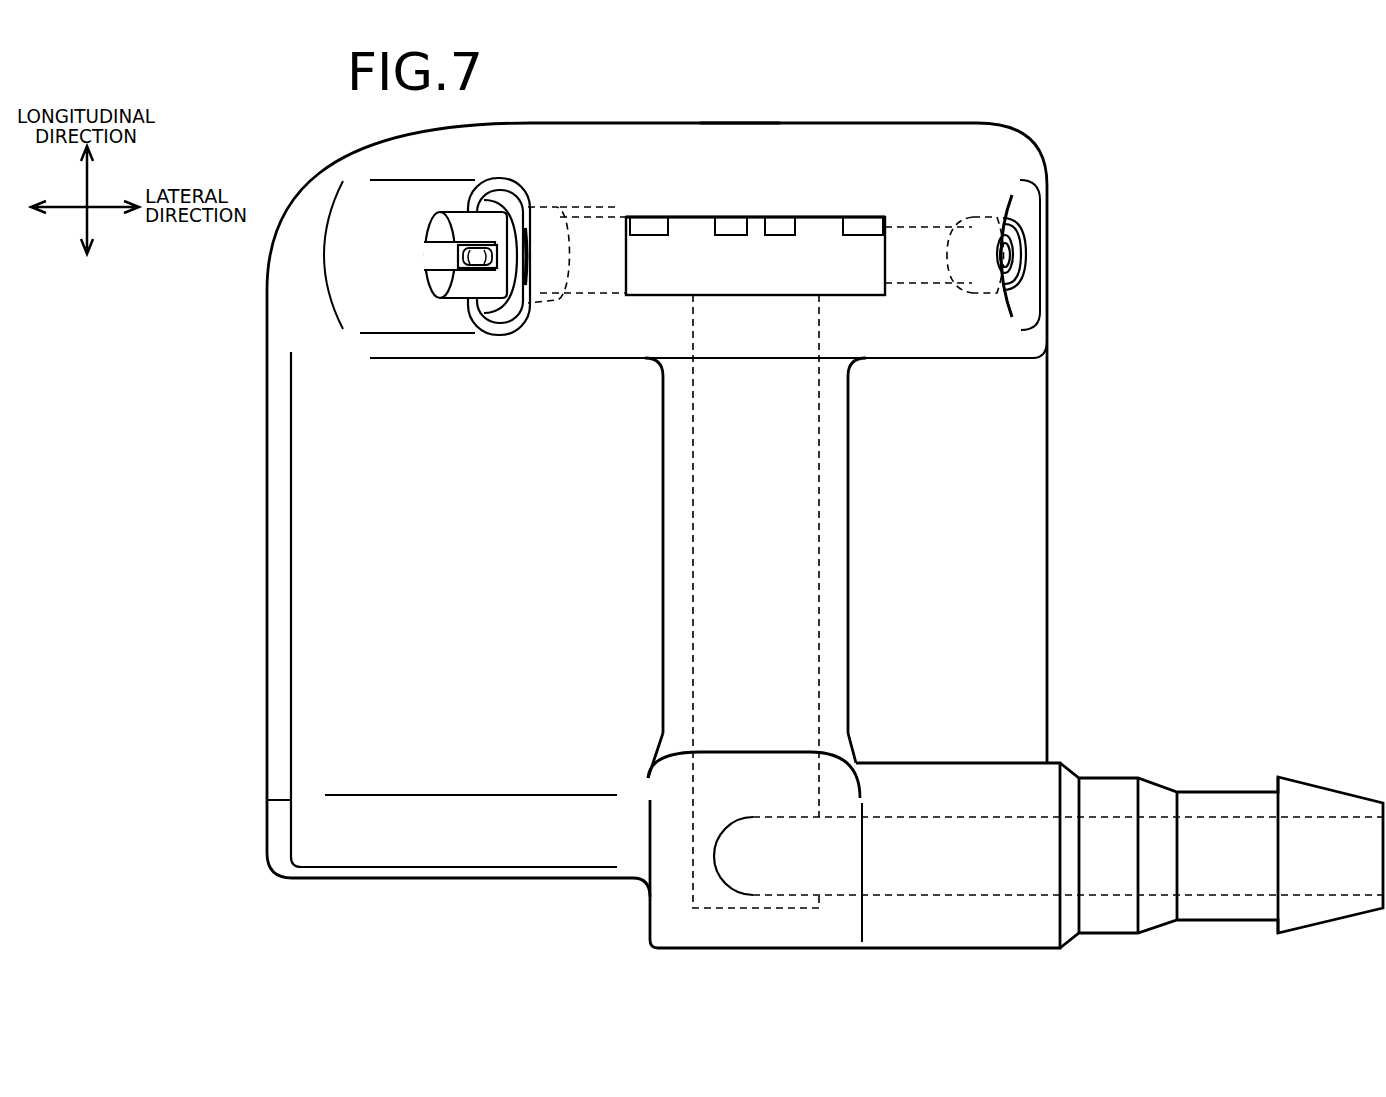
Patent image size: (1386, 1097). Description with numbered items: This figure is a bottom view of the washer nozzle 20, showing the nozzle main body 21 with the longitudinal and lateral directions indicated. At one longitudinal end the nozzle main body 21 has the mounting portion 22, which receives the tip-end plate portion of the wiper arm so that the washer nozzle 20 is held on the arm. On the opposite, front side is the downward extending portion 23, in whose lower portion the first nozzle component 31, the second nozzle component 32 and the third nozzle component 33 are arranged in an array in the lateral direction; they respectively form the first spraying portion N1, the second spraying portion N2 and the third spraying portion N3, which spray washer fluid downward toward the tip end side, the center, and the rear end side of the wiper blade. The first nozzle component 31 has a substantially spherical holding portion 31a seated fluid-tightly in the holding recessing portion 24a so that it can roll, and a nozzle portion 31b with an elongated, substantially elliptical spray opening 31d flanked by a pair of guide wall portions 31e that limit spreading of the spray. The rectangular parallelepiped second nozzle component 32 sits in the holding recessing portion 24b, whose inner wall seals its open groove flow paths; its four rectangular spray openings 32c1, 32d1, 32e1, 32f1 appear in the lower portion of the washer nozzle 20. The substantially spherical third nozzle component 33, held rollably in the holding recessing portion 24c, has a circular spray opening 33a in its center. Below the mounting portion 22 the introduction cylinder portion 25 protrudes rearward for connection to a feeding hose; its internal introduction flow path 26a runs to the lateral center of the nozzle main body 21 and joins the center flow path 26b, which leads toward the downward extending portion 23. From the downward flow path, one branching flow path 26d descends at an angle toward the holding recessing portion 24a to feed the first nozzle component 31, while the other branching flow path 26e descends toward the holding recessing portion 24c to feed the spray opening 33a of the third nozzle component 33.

The washer nozzle 20 is at (1191, 213).
The nozzle main body 21 is at (1036, 513).
The mounting portion 22 is at (267, 752).
The downward extending portion 23 is at (870, 123).
The holding recessing portion 24a is at (543, 303).
The holding recessing portion 24b is at (647, 283).
The holding recessing portion 24c is at (978, 296).
The introduction cylinder portion 25 is at (1226, 791).
The introduction flow path 26a is at (975, 825).
The center flow path 26b is at (819, 540).
The branching flow path 26d is at (610, 290).
The branching flow path 26e is at (920, 280).
The first nozzle component 31 is at (652, 171).
The holding portion 31a is at (600, 207).
The nozzle portion 31b is at (475, 222).
The spray opening 31d is at (463, 253).
The guide wall portions 31e is at (437, 229).
The second nozzle component 32 is at (755, 280).
The spray opening 32c1 is at (657, 222).
The spray opening 32d1 is at (735, 226).
The spray opening 32e1 is at (780, 224).
The spray opening 32f1 is at (852, 226).
The third nozzle component 33 is at (975, 216).
The spray opening 33a is at (1003, 255).
The first spraying portion N1 is at (436, 188).
The second spraying portion N2 is at (734, 128).
The third spraying portion N3 is at (1022, 181).